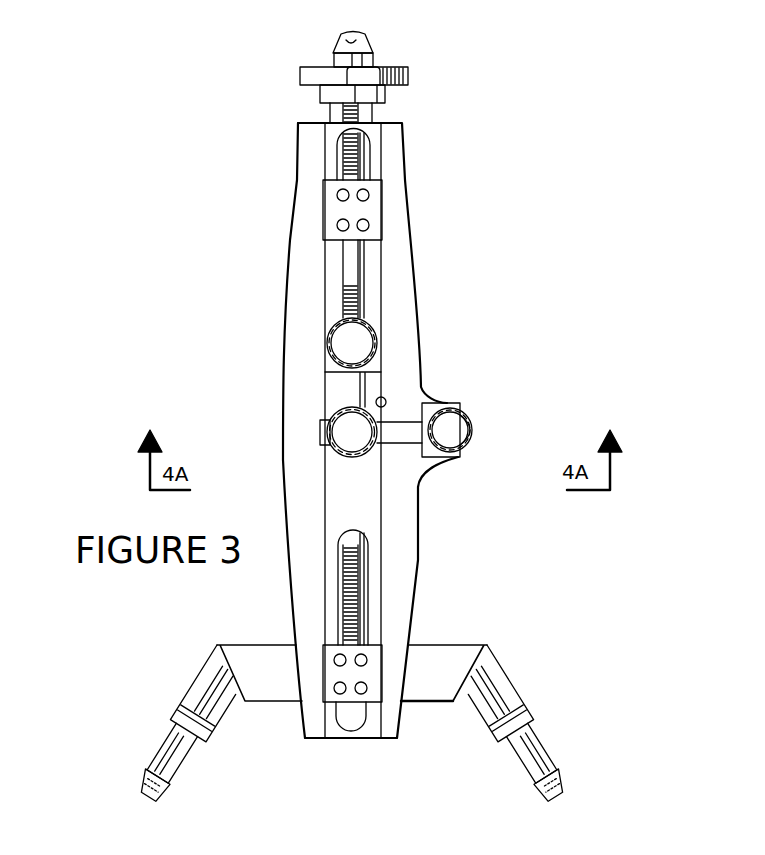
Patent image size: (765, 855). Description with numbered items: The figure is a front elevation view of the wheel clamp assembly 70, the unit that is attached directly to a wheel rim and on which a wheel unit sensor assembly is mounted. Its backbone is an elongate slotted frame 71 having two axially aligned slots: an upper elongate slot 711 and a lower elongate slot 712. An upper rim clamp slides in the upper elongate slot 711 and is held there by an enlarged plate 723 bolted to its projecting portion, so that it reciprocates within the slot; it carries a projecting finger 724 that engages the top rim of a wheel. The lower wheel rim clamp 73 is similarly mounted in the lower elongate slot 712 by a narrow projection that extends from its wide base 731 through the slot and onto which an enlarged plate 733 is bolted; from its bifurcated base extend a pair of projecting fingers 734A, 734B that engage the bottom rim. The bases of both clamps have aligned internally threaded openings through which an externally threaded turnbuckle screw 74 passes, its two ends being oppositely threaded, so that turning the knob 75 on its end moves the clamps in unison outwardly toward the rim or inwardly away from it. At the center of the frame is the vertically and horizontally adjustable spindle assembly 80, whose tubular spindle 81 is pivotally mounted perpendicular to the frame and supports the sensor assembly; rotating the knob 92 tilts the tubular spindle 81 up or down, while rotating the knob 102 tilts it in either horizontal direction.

The wheel clamp assembly 70 is at (340, 430).
The elongate slotted frame 71 is at (298, 200).
The upper elongate slot 711 is at (340, 166).
The lower elongate slot 712 is at (360, 566).
The enlarged plate 723 is at (366, 212).
The projecting finger 724 is at (374, 40).
The wheel rim clamp 73 is at (451, 643).
The base 731 is at (430, 703).
The enlarged plate 733 is at (330, 677).
The projecting finger 734A is at (150, 797).
The projecting finger 734B is at (550, 770).
The externally threaded turnbuckle screw 74 is at (352, 168).
The knob 75 is at (408, 78).
The spindle assembly 80 is at (380, 424).
The tubular spindle 81 is at (347, 437).
The knob 92 is at (352, 345).
The knob 102 is at (456, 428).